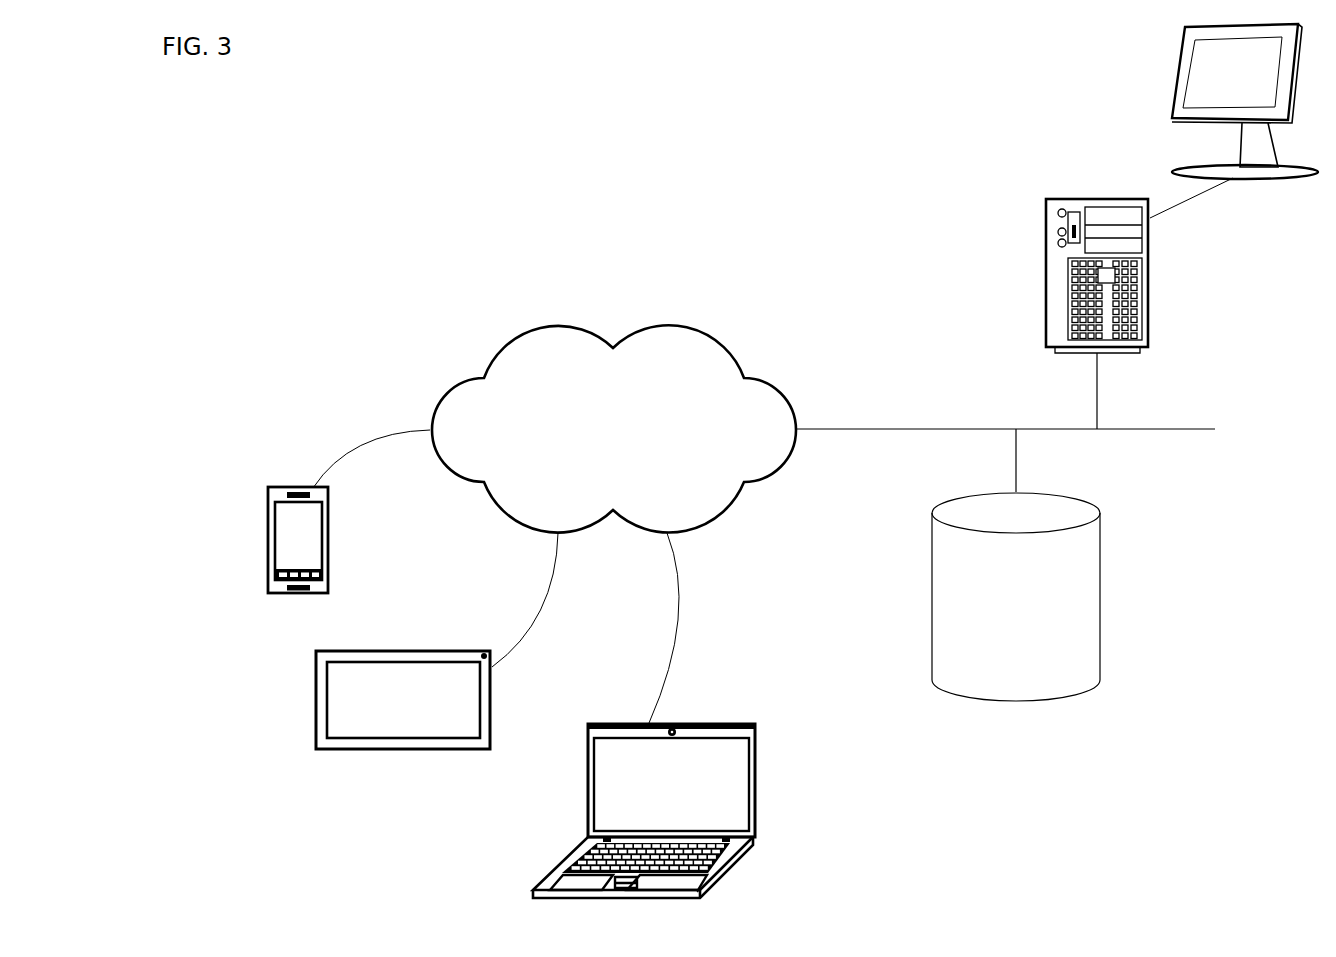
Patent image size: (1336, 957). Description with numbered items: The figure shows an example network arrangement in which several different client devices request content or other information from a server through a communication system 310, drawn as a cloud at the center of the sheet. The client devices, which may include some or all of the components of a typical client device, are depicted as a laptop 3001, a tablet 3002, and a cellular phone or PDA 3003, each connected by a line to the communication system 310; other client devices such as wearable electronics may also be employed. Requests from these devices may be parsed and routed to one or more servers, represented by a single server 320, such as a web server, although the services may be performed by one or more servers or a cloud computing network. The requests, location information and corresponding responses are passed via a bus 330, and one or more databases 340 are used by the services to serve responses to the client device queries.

The communication system 310 is at (598, 333).
The server 320 is at (1148, 278).
The bus 330 is at (1187, 429).
The database 340 is at (1100, 607).
The laptop client device 3001 is at (588, 790).
The tablet client device 3002 is at (316, 695).
The cellular phone or PDA client device 3003 is at (269, 538).